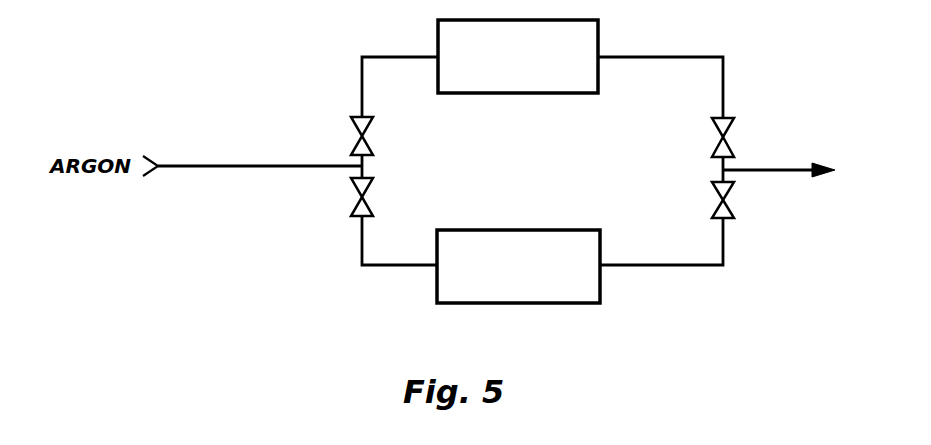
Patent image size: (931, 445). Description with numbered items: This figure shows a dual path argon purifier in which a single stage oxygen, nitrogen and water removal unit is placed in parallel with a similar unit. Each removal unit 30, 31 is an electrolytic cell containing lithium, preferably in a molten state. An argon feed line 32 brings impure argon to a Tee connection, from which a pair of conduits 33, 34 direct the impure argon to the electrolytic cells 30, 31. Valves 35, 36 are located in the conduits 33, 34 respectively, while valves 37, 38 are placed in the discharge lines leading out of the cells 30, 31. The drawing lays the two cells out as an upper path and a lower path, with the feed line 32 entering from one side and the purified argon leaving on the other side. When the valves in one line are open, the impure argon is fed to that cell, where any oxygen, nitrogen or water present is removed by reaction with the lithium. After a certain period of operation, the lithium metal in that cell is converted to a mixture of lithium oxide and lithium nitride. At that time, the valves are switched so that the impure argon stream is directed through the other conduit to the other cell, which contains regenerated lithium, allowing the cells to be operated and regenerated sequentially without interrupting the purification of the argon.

The removal unit 30 is at (518, 56).
The removal unit 31 is at (518, 266).
The argon feed line 32 is at (248, 168).
The conduit 33 is at (360, 87).
The conduit 34 is at (360, 243).
The valve 35 is at (352, 142).
The valve 36 is at (354, 196).
The valve 37 is at (734, 137).
The valve 38 is at (734, 208).